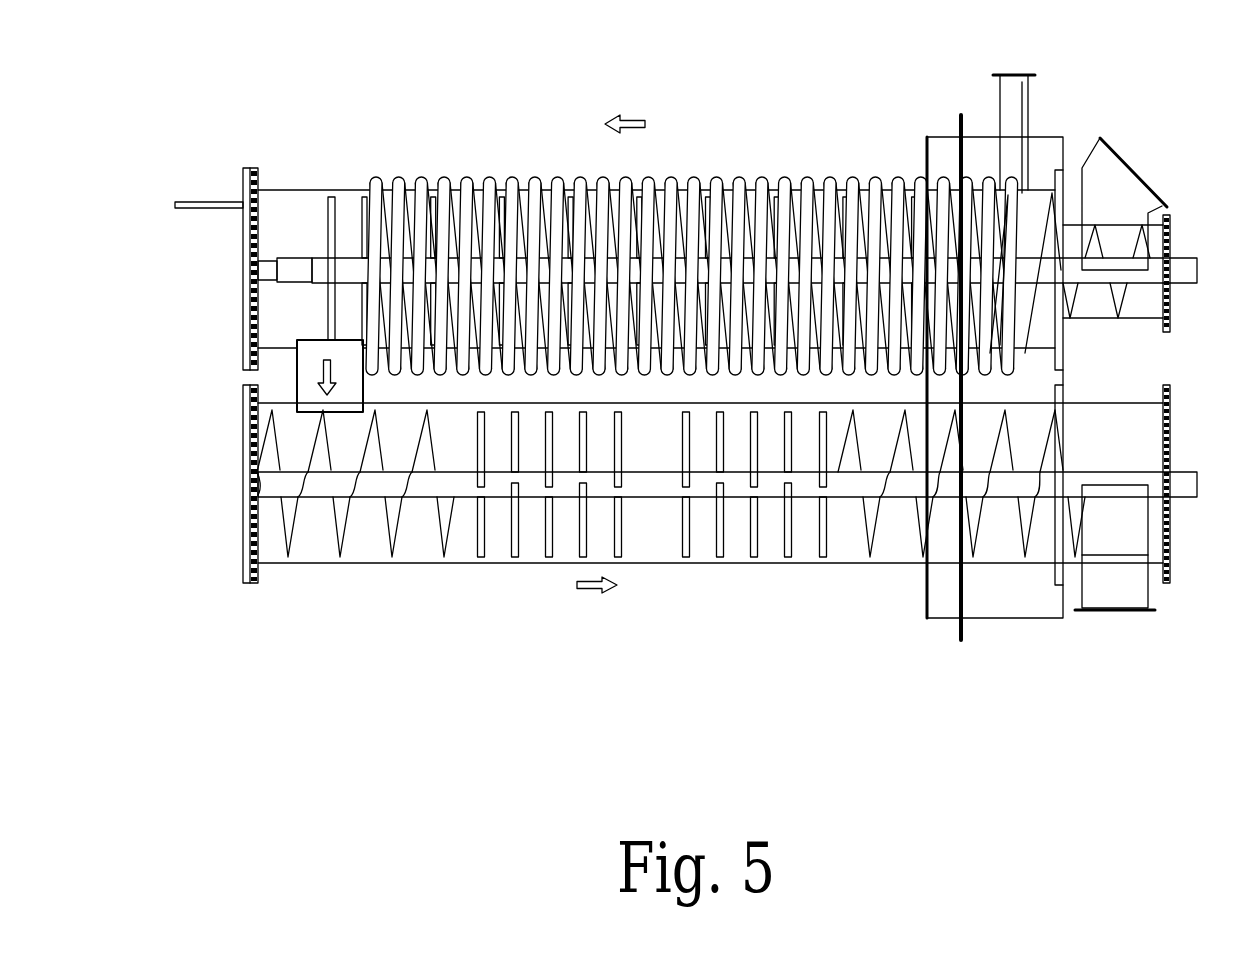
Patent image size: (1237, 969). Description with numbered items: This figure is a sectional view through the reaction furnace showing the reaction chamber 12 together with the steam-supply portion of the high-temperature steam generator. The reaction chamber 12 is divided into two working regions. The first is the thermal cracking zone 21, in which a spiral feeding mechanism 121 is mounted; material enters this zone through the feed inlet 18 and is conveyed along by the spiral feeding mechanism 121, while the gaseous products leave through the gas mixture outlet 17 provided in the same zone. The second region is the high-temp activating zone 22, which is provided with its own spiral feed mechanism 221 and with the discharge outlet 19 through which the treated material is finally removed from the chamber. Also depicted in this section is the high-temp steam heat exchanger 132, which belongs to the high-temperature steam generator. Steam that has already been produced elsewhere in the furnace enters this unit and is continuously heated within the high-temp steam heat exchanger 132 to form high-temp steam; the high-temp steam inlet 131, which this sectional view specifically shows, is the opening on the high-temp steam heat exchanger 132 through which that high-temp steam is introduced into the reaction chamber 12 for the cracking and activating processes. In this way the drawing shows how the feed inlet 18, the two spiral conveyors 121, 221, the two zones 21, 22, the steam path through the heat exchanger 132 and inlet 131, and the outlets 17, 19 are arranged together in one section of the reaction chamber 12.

The reaction chamber 12 is at (278, 190).
The spiral feeding mechanism 121 is at (997, 213).
The high-temp steam inlet 131 is at (370, 268).
The high-temp steam heat exchanger 132 is at (712, 180).
The gas mixture outlet 17 is at (1012, 77).
The feed inlet 18 is at (1133, 170).
The discharge outlet 19 is at (1116, 597).
The thermal cracking zone 21 is at (651, 375).
The high-temp activating zone 22 is at (728, 563).
The spiral feed mechanism 221 is at (973, 528).